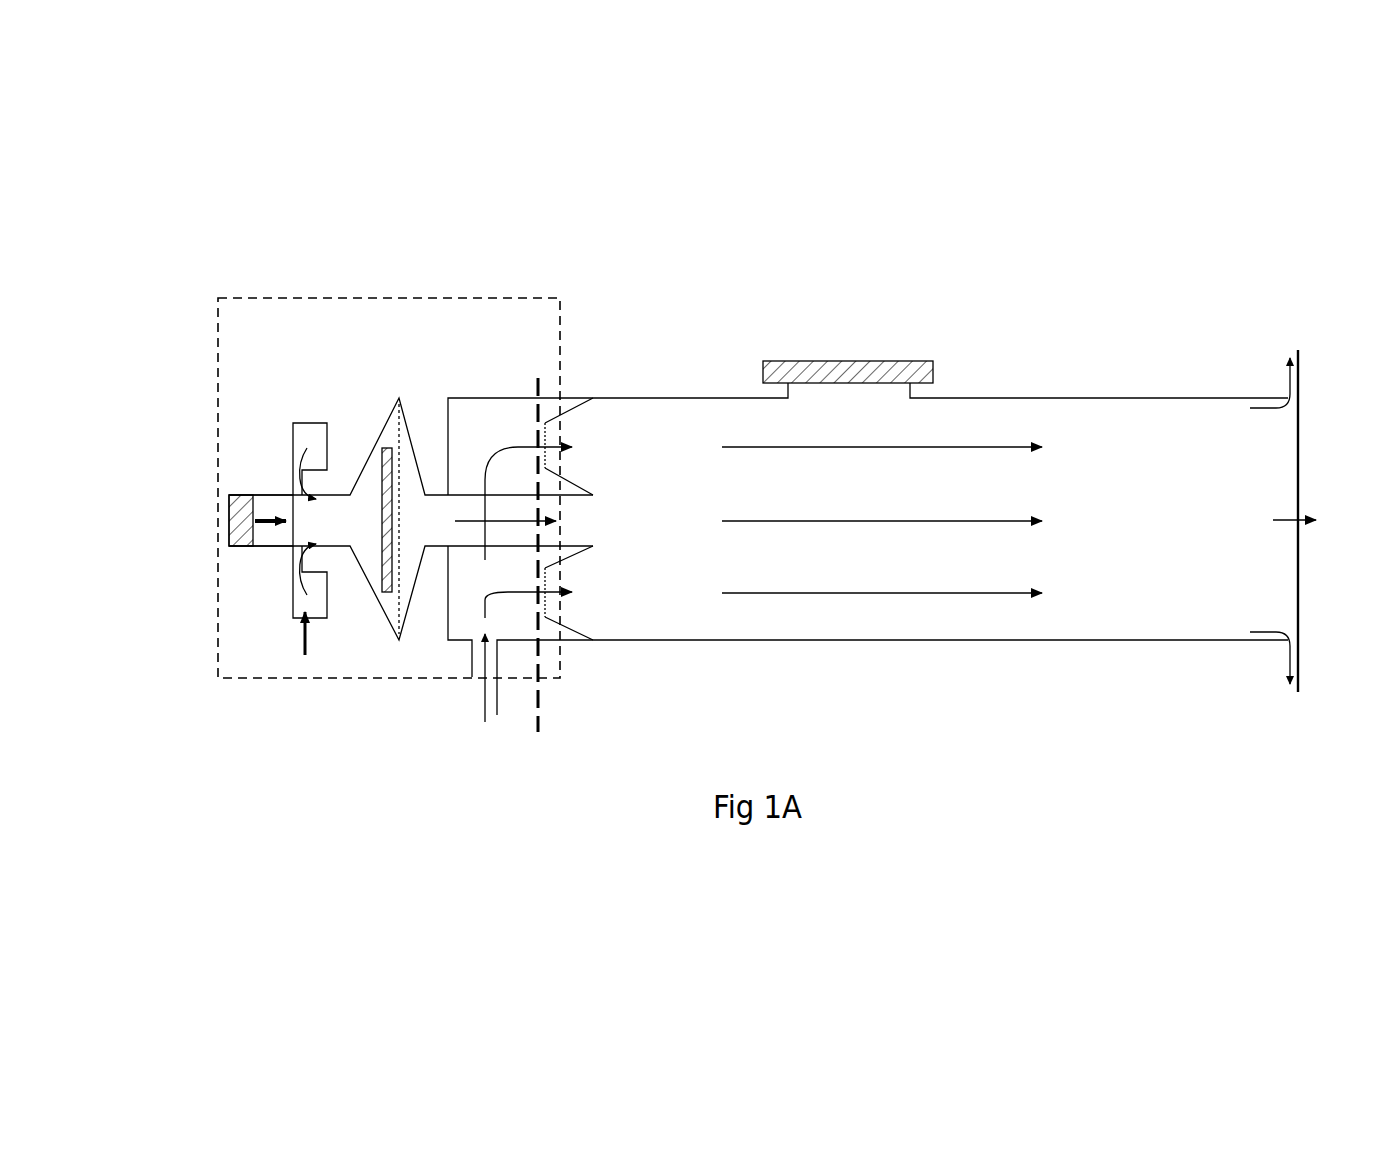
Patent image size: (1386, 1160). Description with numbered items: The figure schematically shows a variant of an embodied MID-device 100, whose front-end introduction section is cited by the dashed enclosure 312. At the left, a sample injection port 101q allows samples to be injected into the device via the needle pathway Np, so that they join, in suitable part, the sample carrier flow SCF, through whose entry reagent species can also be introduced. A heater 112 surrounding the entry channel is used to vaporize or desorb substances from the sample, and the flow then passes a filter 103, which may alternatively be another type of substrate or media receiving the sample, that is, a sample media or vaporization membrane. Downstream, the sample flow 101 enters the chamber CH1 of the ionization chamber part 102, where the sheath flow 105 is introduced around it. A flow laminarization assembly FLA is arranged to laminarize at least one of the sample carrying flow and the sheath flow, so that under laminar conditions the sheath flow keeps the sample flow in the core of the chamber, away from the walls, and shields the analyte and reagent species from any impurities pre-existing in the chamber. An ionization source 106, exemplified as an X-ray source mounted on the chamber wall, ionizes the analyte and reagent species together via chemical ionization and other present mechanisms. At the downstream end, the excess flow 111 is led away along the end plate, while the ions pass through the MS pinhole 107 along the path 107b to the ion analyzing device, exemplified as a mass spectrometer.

The MID-device 100 is at (190, 285).
The introduction of the MID-device 312 is at (565, 302).
The sample flow 101 is at (562, 565).
The sample injection port 101q is at (240, 519).
The needle pathway Np is at (270, 509).
The sample carrier flow SCF is at (292, 508).
The heater 112 is at (388, 495).
The filter 103 is at (390, 580).
The flow laminarization assembly FLA is at (544, 573).
The sheath flow 105 is at (513, 400).
The ionization source 106 is at (792, 366).
The chamber CH1 is at (646, 503).
The ionization chamber part 102 is at (860, 492).
The excess flow 111 is at (1271, 412).
The MS pinhole 107 is at (1301, 511).
The path to ion analyzing device 107b is at (1303, 523).